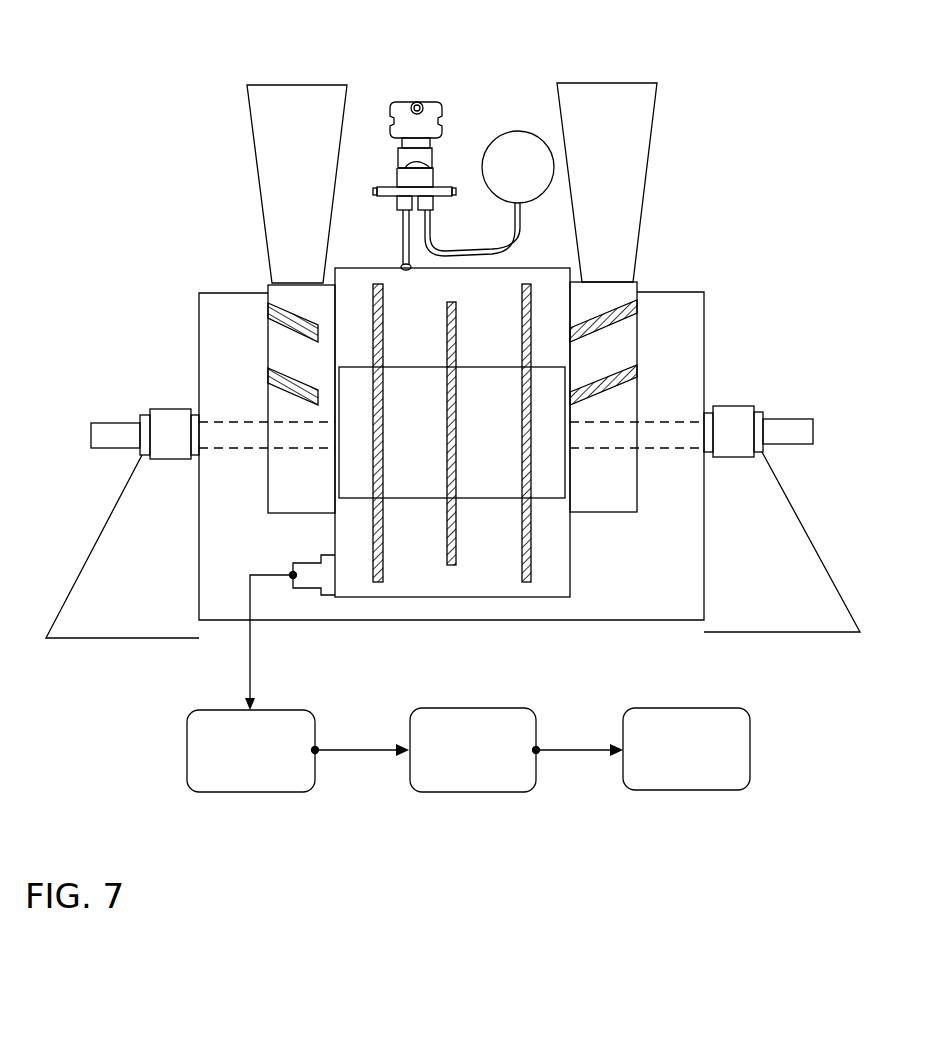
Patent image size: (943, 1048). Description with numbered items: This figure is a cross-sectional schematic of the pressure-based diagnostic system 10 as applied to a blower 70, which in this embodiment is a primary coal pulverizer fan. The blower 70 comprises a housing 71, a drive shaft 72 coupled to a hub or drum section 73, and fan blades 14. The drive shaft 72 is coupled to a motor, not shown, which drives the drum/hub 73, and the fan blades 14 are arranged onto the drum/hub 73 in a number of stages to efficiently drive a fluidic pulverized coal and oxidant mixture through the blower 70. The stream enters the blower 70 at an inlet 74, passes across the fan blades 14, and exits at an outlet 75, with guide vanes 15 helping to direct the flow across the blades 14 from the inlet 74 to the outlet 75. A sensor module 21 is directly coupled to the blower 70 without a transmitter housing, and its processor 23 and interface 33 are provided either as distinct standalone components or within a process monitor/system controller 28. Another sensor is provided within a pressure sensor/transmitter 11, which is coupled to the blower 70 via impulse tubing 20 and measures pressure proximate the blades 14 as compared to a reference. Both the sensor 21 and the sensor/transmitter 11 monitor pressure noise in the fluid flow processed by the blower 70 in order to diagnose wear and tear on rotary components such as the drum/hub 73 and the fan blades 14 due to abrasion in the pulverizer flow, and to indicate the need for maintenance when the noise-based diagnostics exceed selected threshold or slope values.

The pressure-based diagnostic system 10 is at (92, 66).
The pressure sensor/transmitter 11 is at (433, 101).
The fan blades 14 is at (522, 314).
The guide vanes 15 is at (297, 400).
The impulse tubing 20 is at (480, 250).
The sensor module 21 is at (293, 575).
The processor 23 is at (187, 733).
The process monitor/system controller 28 is at (623, 730).
The interface 33 is at (410, 735).
The blower 70 is at (752, 190).
The housing 71 is at (240, 293).
The drive shaft 72 is at (122, 420).
The hub or drum section 73 is at (509, 446).
The inlet 74 is at (280, 85).
The outlet 75 is at (624, 83).